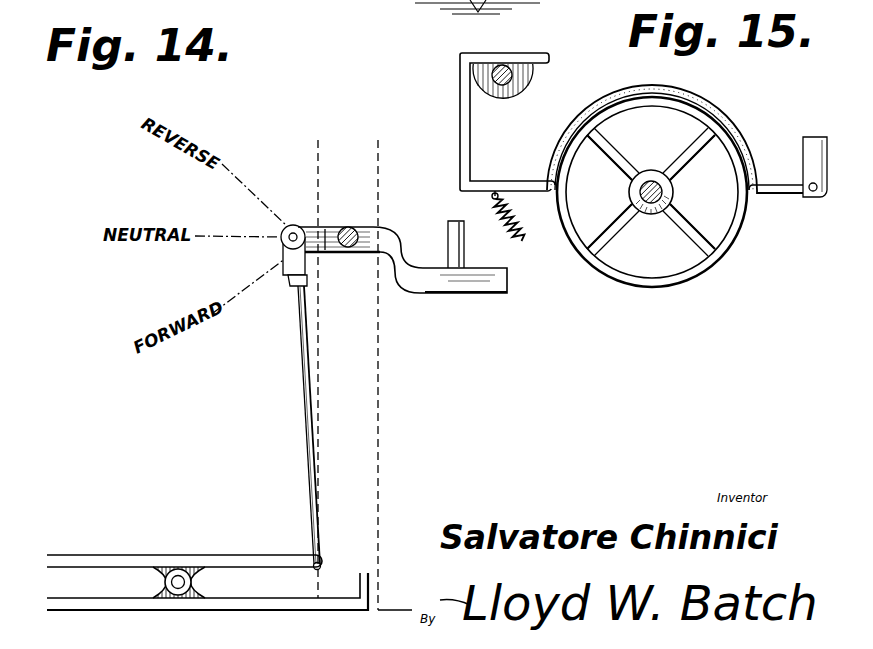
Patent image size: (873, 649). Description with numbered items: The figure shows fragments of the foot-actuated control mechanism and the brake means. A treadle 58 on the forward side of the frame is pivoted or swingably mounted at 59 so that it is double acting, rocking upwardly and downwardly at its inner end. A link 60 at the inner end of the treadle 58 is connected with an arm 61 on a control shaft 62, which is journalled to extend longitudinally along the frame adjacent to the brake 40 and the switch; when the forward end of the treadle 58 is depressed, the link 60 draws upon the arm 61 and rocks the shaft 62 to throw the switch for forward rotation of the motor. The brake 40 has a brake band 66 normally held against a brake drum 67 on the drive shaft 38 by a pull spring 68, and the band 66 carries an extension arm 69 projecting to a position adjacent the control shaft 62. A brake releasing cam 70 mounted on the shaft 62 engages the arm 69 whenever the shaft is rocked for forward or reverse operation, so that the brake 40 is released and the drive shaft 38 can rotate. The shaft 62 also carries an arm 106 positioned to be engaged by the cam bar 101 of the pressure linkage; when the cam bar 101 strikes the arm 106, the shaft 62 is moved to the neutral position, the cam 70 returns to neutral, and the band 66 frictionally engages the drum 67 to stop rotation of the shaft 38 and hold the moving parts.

In FIG. 15, the drive shaft 38 is at (663, 192).
In FIG. 15, the brake 40 is at (708, 106).
In FIG. 14, the treadle 58 is at (223, 556).
In FIG. 14, the treadle pivot 59 is at (179, 590).
In FIG. 14, the link 60 is at (307, 413).
In FIG. 14, the arm 61 is at (333, 230).
In FIG. 14, the control shaft 62 is at (346, 252).
In FIG. 15, the control shaft 62 is at (498, 87).
In FIG. 15, the brake band 66 is at (740, 132).
In FIG. 15, the brake drum 67 is at (731, 235).
In FIG. 15, the pull spring 68 is at (523, 241).
In FIG. 15, the extension arm 69 is at (461, 94).
In FIG. 15, the brake releasing cam 70 is at (530, 79).
In FIG. 14, the cam bar 101 is at (455, 226).
In FIG. 14, the arm 106 is at (452, 286).